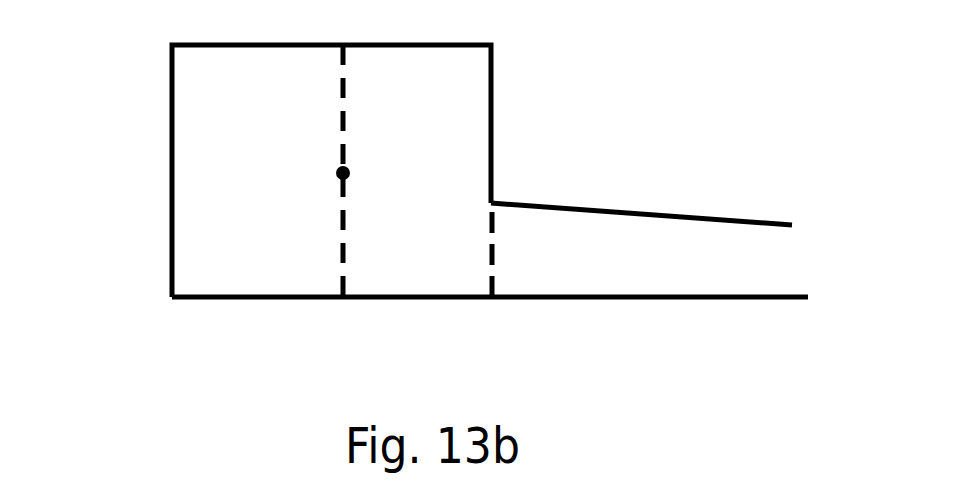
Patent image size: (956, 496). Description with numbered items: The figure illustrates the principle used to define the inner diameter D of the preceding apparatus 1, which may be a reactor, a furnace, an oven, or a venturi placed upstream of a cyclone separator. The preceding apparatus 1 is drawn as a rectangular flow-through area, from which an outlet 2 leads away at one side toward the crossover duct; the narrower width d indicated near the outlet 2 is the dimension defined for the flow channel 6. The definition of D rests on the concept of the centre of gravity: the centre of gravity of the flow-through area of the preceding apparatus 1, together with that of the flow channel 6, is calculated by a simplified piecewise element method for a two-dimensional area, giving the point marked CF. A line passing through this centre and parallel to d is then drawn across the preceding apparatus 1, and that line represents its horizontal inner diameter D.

The preceding apparatus 1 is at (200, 153).
The outlet 2 is at (507, 235).
The flow channel 6 is at (620, 267).